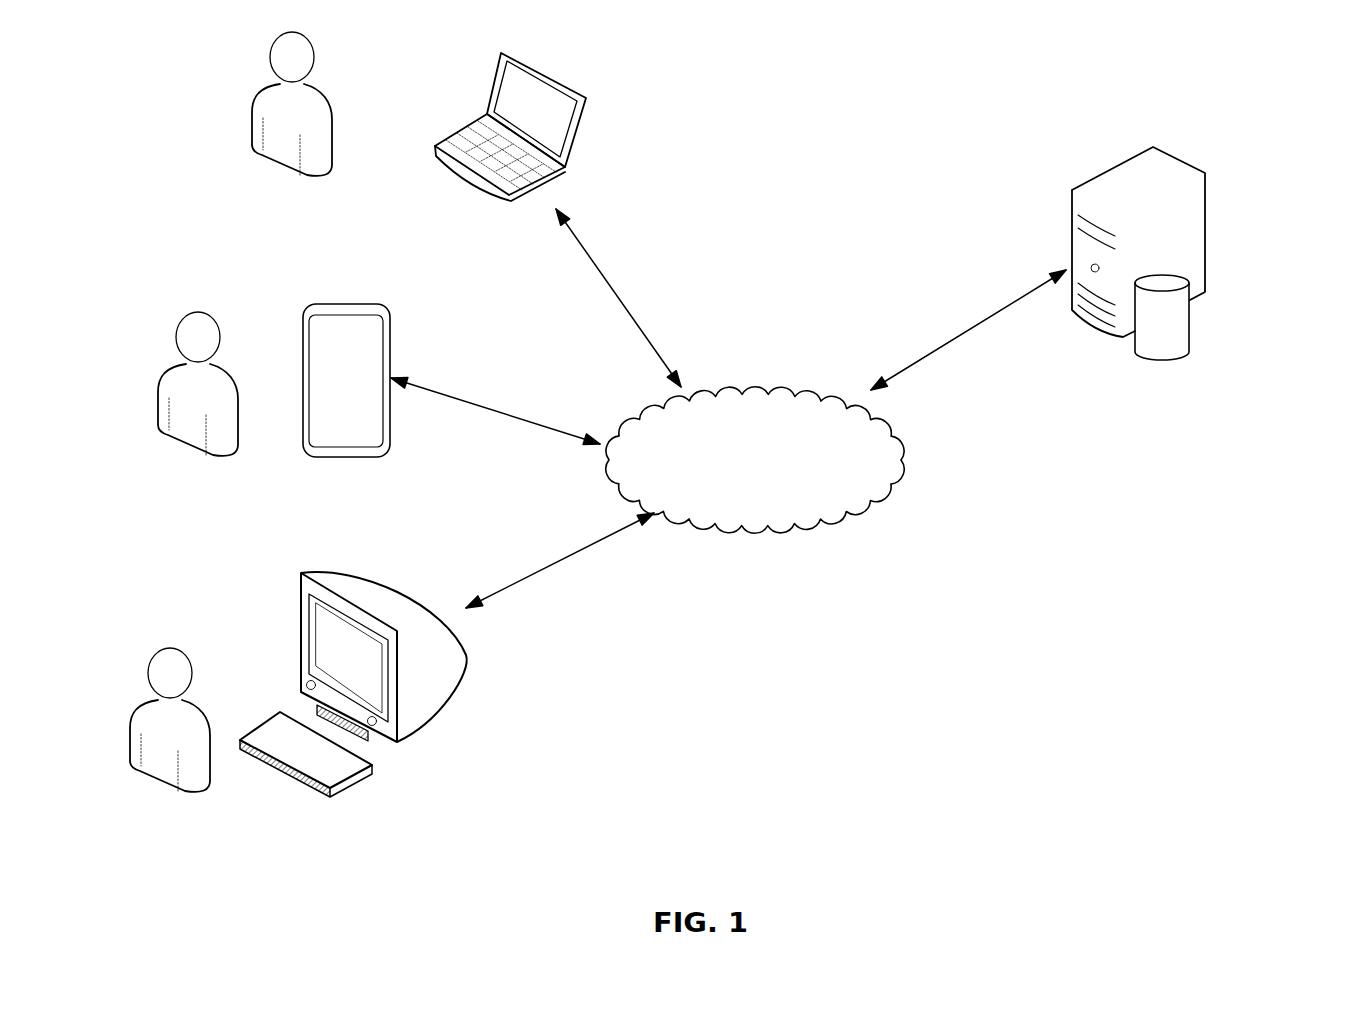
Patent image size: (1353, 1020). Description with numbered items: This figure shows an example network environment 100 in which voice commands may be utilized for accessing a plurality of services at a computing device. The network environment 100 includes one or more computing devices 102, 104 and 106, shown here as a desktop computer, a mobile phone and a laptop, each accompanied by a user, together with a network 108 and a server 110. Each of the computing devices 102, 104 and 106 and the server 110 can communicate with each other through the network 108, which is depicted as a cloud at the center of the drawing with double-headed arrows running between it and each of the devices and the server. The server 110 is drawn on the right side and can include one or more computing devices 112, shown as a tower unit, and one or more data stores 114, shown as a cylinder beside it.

The network environment 100 is at (1339, 41).
The computing device 102 is at (363, 575).
The computing device 104 is at (360, 304).
The computing device 106 is at (572, 88).
The network 108 is at (753, 388).
The server 110 is at (1145, 252).
The computing device 112 is at (1182, 160).
The data store 114 is at (1187, 355).